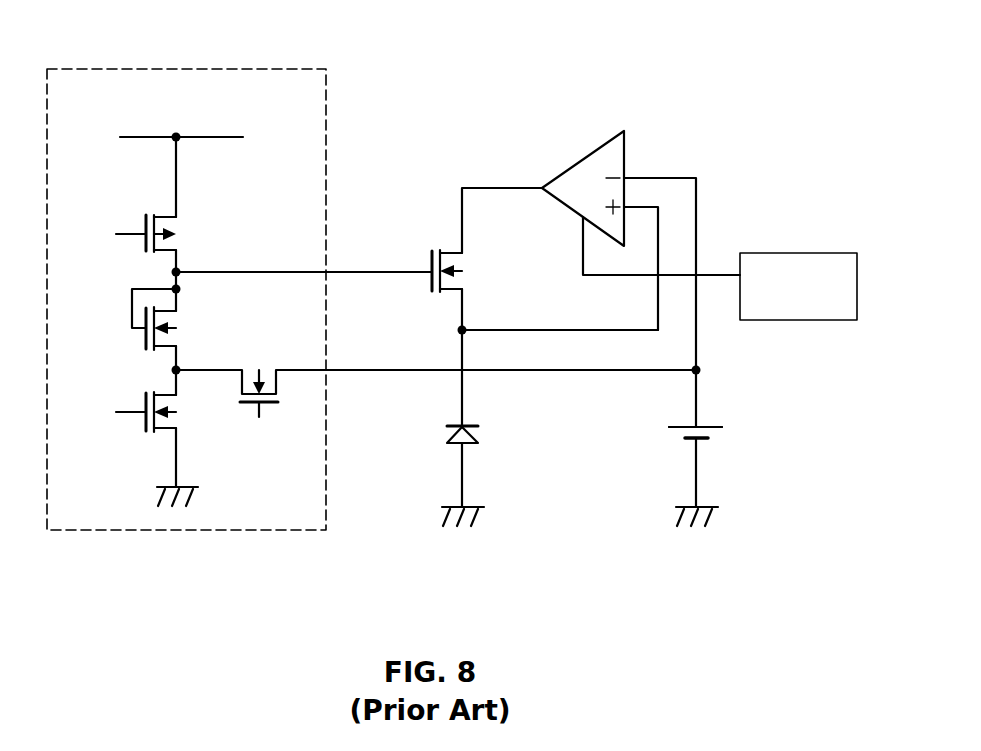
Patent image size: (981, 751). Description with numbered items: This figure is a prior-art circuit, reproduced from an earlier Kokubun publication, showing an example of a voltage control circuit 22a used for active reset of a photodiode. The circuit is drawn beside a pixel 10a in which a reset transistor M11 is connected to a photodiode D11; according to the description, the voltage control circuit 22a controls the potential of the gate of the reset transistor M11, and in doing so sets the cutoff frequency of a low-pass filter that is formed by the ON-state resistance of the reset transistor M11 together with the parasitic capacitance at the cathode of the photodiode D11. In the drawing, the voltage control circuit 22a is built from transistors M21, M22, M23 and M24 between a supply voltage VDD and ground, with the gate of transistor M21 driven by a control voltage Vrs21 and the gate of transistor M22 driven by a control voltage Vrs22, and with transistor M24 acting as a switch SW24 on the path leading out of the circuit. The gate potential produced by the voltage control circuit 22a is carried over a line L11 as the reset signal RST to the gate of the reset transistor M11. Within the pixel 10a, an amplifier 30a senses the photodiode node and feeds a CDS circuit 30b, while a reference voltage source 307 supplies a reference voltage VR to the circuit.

The voltage control circuit 22a is at (257, 67).
The pixel 10a is at (434, 149).
The amplifier 30a is at (578, 160).
The CDS circuit 30b is at (822, 252).
The reference voltage source VR 307 is at (726, 448).
The reset transistor M11 is at (447, 292).
The photodiode D11 is at (443, 432).
The transistor M21 is at (139, 222).
The transistor M22 is at (161, 437).
The transistor M23 is at (136, 339).
The transistor M24 is at (258, 366).
The switch SW24 is at (238, 407).
The line L11 is at (258, 270).
The supply voltage VDD is at (156, 136).
The control voltage Vrs21 is at (103, 234).
The control voltage Vrs22 is at (103, 412).
The reset signal RST is at (366, 260).
The reference voltage VR is at (710, 433).